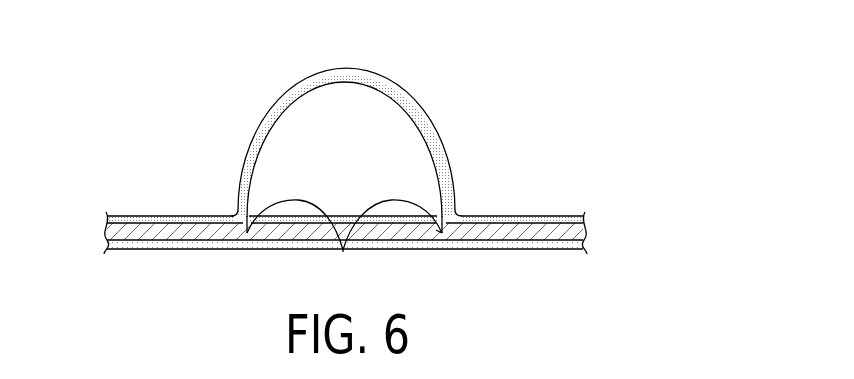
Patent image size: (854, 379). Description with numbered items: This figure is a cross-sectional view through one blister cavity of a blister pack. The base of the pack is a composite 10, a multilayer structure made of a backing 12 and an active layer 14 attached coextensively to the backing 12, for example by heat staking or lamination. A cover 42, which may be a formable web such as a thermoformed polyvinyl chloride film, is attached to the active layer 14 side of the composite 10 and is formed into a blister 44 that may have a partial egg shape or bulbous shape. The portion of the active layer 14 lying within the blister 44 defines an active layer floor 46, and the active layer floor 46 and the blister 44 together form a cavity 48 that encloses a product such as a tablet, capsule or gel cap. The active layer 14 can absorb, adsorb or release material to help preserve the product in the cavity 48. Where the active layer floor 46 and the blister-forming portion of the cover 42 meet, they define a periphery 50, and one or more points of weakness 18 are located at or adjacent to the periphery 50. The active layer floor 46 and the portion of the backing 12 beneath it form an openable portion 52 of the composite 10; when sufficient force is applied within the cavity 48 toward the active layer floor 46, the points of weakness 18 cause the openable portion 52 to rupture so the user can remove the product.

The composite 10 is at (377, 238).
The backing 12 is at (150, 243).
The active layer 14 is at (147, 230).
The points of weakness 18 is at (343, 252).
The cover 42 is at (509, 217).
The blister 44 is at (417, 114).
The active layer floor 46 is at (342, 212).
The cavity 48 is at (328, 123).
The periphery 50 is at (459, 216).
The openable portion 52 is at (431, 244).